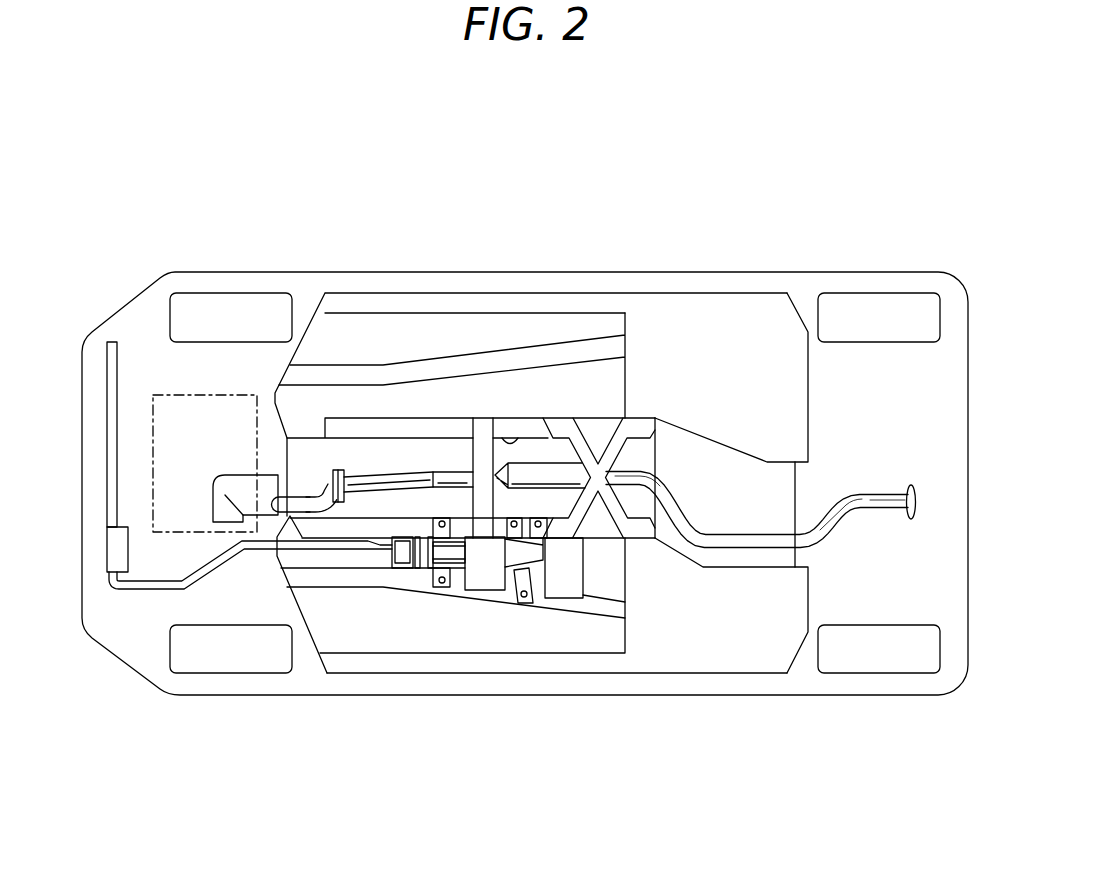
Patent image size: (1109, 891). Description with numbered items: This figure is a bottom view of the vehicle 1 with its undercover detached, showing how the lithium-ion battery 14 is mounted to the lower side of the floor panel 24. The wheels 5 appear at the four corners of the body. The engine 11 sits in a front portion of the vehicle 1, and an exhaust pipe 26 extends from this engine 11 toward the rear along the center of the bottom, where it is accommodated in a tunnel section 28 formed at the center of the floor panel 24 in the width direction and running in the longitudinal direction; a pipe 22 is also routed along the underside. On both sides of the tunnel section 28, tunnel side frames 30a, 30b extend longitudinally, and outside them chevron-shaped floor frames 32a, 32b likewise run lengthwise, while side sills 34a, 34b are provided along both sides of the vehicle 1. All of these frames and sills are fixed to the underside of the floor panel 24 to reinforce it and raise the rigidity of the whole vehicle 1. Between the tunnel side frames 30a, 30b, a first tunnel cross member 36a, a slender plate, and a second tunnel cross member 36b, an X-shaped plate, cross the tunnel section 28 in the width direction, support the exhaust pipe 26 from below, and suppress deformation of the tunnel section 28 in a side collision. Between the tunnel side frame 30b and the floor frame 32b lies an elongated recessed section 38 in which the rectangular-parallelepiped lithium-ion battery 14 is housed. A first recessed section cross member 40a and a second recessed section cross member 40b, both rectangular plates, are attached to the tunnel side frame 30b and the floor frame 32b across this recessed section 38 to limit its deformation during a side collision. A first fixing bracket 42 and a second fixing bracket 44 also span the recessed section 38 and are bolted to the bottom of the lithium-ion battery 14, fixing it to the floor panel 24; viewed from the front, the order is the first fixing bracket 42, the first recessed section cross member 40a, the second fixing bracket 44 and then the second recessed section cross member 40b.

The vehicle 1 is at (763, 208).
The wheel 5 is at (232, 300).
The engine 11 is at (157, 392).
The lithium-ion battery 14 is at (407, 573).
The fuel pipe 22 is at (148, 590).
The floor panel 24 is at (687, 450).
The exhaust pipe 26 is at (883, 495).
The tunnel section 28 is at (499, 440).
The tunnel side frame 30a is at (437, 430).
The tunnel side frame 30b is at (605, 527).
The floor frame 32a is at (408, 365).
The floor frame 32b is at (480, 595).
The side sill 34a is at (363, 303).
The side sill 34b is at (382, 663).
The first tunnel cross member 36a is at (483, 427).
The second tunnel cross member 36b is at (587, 450).
The recessed section 38 is at (353, 557).
The first recessed section cross member 40a is at (503, 593).
The second recessed section cross member 40b is at (575, 602).
The first fixing bracket 42 is at (428, 552).
The second fixing bracket 44 is at (538, 553).